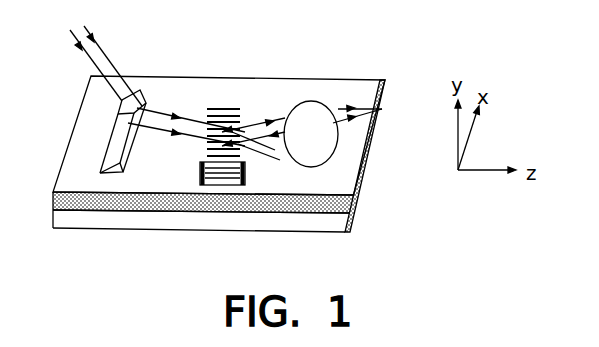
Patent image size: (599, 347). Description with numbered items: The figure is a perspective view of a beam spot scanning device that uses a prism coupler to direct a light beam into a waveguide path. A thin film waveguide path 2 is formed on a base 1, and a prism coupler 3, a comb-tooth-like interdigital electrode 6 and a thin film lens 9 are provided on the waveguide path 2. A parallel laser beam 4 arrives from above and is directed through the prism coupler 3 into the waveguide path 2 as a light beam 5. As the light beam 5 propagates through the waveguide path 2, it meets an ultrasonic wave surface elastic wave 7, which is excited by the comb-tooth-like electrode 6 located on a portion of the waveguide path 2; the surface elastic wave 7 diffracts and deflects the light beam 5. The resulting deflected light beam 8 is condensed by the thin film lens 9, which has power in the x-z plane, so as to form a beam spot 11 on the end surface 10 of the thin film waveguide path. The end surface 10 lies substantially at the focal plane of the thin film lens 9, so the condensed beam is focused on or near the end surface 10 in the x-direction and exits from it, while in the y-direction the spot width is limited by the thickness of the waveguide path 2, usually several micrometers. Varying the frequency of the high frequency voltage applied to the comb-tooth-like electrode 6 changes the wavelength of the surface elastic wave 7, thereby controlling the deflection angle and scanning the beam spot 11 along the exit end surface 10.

The base 1 is at (137, 223).
The waveguide path 2 is at (300, 212).
The prism coupler 3 is at (118, 131).
The parallel laser beam 4 is at (99, 55).
The light beam 5 is at (162, 117).
The comb-tooth-like electrode 6 is at (246, 177).
The ultrasonic wave surface elastic wave 7 is at (230, 108).
The deflected light beam 8 is at (252, 122).
The thin film lens 9 is at (308, 102).
The end surface 10 is at (363, 174).
The beam spot 11 is at (383, 110).